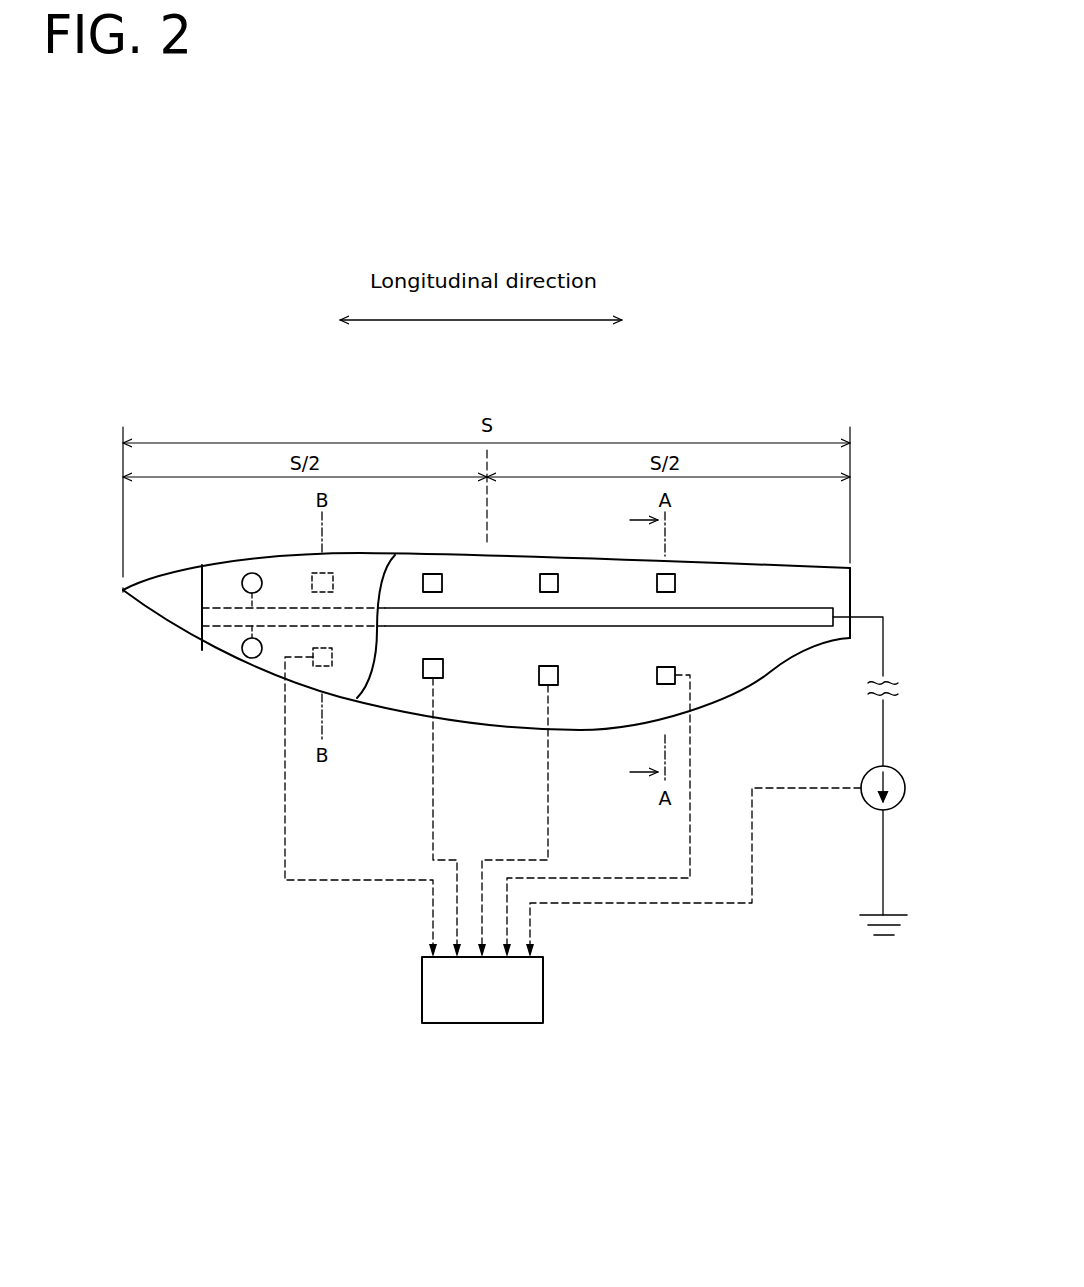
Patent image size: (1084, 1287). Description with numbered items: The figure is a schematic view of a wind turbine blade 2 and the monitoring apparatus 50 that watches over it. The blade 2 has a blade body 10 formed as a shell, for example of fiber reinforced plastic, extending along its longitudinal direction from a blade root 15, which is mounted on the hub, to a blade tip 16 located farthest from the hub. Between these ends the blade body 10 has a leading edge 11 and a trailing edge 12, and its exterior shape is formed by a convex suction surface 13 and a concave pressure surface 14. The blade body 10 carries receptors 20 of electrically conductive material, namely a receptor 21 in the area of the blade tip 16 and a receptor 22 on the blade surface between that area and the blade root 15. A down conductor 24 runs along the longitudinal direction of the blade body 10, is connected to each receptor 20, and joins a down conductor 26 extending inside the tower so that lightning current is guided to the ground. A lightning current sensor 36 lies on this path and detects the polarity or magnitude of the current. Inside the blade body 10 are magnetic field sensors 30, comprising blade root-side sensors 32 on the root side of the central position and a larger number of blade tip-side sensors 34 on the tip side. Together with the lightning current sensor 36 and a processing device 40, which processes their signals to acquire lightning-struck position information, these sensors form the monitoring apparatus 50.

The wind turbine blade 2 is at (792, 402).
The blade body 10 is at (760, 679).
The leading edge 11 is at (612, 558).
The trailing edge 12 is at (572, 733).
The suction surface 13 is at (484, 704).
The pressure surface 14 is at (484, 703).
The blade root 15 is at (852, 588).
The blade tip 16 is at (122, 590).
The receptors 20 is at (170, 619).
The receptor 21 is at (158, 618).
The receptor 22 is at (250, 572).
The down conductor 24 is at (758, 608).
The down conductor 26 is at (884, 655).
The magnetic field sensors 30 is at (522, 673).
The blade root-side sensors 32 is at (549, 573).
The blade tip-side sensors 34 is at (337, 792).
The lightning current sensor 36 is at (905, 776).
The processing device 40 is at (545, 992).
The monitoring apparatus 50 is at (356, 1064).